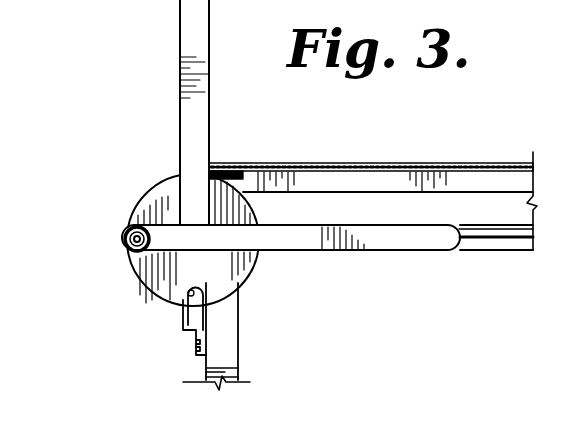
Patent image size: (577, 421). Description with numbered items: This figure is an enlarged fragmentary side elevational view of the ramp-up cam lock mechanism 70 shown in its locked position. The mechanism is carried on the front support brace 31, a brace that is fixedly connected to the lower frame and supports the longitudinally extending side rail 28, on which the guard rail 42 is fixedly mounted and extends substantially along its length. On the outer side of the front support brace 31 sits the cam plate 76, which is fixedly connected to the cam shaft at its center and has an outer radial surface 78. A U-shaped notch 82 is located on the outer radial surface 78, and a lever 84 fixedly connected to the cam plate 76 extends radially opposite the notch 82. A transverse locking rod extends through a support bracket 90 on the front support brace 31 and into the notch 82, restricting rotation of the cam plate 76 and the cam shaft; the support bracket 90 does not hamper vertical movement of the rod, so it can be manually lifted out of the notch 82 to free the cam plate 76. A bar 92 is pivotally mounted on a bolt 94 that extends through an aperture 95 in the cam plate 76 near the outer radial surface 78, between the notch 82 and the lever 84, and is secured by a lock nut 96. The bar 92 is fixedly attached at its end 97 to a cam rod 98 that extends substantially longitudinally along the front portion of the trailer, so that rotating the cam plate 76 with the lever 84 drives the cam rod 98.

The ramp-up cam lock mechanism 70 is at (136, 84).
The lever 84 is at (200, 100).
The guard rail 42 is at (381, 162).
The side rail 28 is at (440, 172).
The outer radial surface 78 is at (148, 192).
The cam plate 76 is at (160, 289).
The bolt 94 is at (128, 231).
The aperture 95 is at (124, 240).
The lock nut 96 is at (128, 250).
The bar 92 is at (314, 246).
The end 97 is at (462, 243).
The cam rod 98 is at (512, 239).
The U-shaped notch 82 is at (199, 290).
The support bracket 90 is at (183, 327).
The front support brace 31 is at (228, 330).